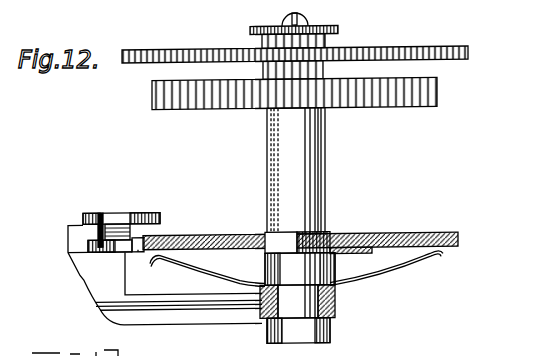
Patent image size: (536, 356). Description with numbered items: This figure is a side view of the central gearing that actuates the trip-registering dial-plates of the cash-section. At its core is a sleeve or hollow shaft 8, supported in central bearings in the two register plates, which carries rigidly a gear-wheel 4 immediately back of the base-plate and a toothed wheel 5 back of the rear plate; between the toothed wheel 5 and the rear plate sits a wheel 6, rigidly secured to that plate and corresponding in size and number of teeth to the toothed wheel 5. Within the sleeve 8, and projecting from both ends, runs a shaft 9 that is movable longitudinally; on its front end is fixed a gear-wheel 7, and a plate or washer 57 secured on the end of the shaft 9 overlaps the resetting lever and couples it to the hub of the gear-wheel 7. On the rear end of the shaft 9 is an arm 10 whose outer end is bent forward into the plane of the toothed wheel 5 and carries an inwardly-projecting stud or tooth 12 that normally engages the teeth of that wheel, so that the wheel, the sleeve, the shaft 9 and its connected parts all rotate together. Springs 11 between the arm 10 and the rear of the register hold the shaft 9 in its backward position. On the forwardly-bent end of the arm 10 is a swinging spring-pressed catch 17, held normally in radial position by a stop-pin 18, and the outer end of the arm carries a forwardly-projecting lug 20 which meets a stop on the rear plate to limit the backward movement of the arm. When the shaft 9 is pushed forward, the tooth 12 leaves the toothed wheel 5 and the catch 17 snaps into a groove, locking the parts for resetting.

The plate or washer 57 is at (340, 30).
The gear-wheel 7 is at (415, 47).
The gear-wheel 4 is at (438, 86).
The sleeve or hollow shaft 8 is at (325, 143).
The toothed wheel 5 is at (459, 238).
The forwardly-projecting lug 20 is at (68, 238).
The swinging spring-pressed catch 17 is at (150, 211).
The stop-pin 18 is at (100, 214).
The stud or tooth 12 is at (138, 252).
The springs 11 is at (378, 278).
The shaft 9 is at (300, 270).
The arm 10 is at (246, 316).
The wheel 6 is at (297, 345).